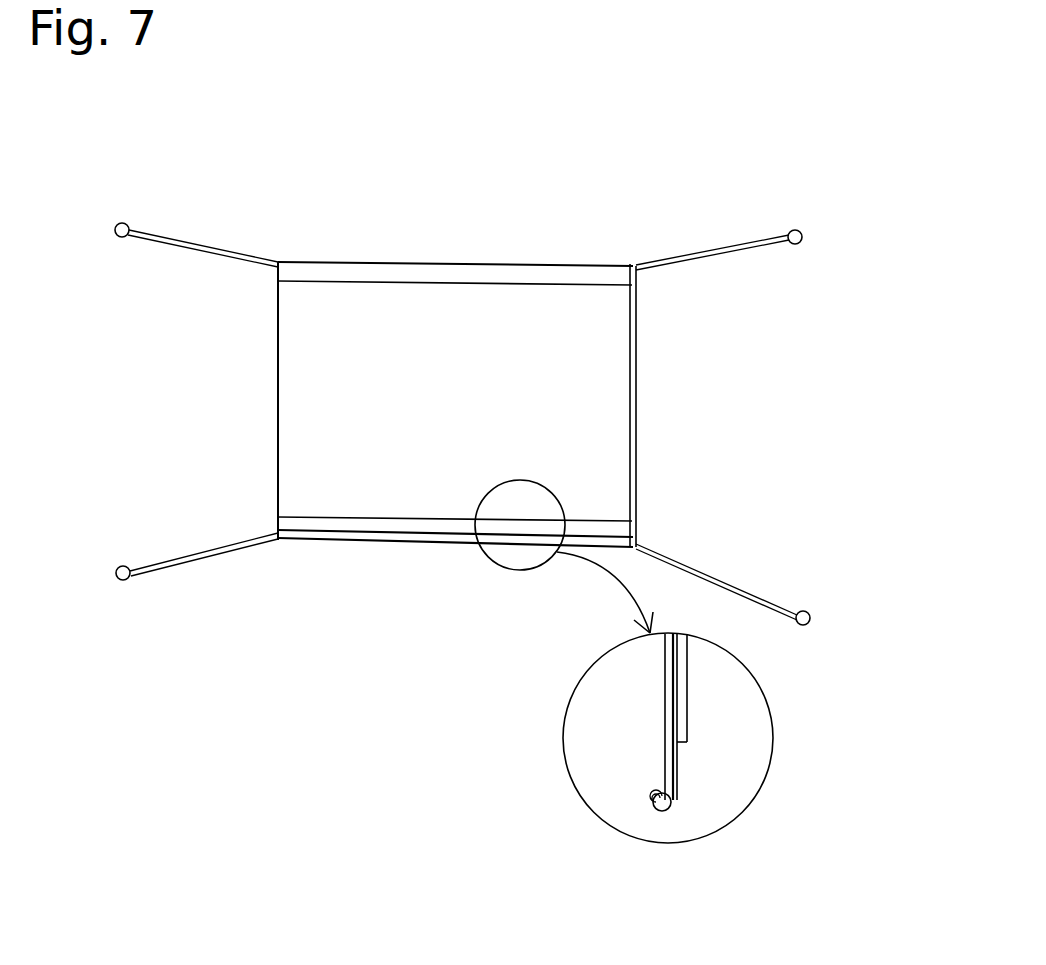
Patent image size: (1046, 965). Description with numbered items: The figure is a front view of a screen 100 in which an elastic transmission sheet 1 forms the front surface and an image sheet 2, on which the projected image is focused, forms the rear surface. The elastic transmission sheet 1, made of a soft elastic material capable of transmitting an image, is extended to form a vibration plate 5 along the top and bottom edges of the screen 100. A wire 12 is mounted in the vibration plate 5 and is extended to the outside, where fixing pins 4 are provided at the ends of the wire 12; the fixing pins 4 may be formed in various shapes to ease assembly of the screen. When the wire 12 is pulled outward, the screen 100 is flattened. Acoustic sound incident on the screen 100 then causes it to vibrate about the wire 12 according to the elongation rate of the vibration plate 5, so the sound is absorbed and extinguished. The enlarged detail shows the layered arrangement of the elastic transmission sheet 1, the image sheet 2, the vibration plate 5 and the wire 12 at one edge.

The elastic transmission sheet 1 is at (588, 404).
The image sheet 2 is at (683, 730).
The fixing pin 4 is at (115, 238).
The vibration plate 5 is at (488, 281).
The wire 12 is at (196, 251).
The screen 100 is at (615, 494).